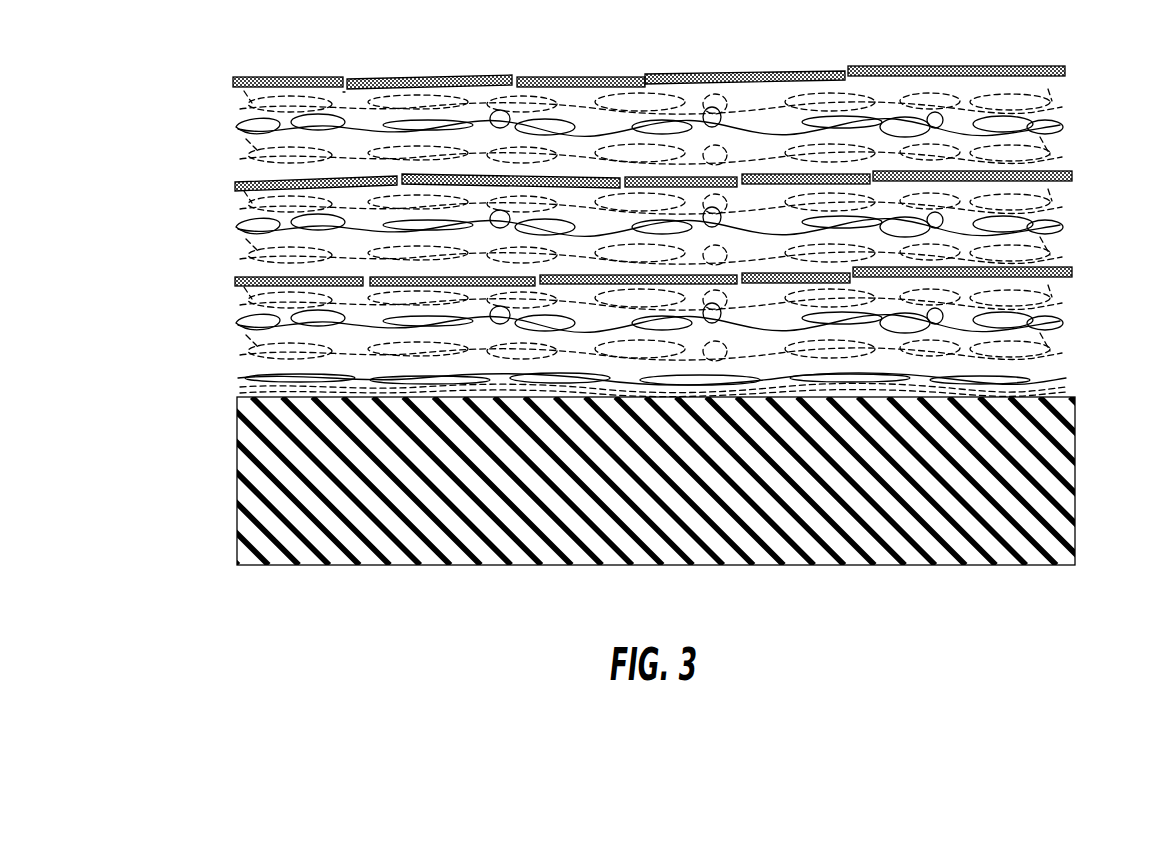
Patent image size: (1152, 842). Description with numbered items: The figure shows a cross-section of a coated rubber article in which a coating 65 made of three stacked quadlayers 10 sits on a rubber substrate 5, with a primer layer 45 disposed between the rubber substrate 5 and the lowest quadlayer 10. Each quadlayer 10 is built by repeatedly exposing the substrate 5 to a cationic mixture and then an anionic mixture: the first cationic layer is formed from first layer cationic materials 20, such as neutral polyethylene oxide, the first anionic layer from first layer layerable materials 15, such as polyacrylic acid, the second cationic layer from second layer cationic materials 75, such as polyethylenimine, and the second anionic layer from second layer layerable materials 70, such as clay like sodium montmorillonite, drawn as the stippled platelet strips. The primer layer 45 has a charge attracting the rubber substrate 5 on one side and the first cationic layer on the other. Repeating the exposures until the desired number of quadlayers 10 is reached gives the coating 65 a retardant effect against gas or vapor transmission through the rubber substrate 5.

The rubber substrate 5 is at (367, 558).
The quadlayer 10 is at (228, 78).
The first layer layerable materials 15 is at (512, 120).
The first layer cationic materials 20 is at (560, 163).
The primer layer 45 is at (228, 372).
The coating 65 is at (1082, 68).
The second layer layerable materials 70 is at (387, 77).
The second layer cationic materials 75 is at (333, 99).